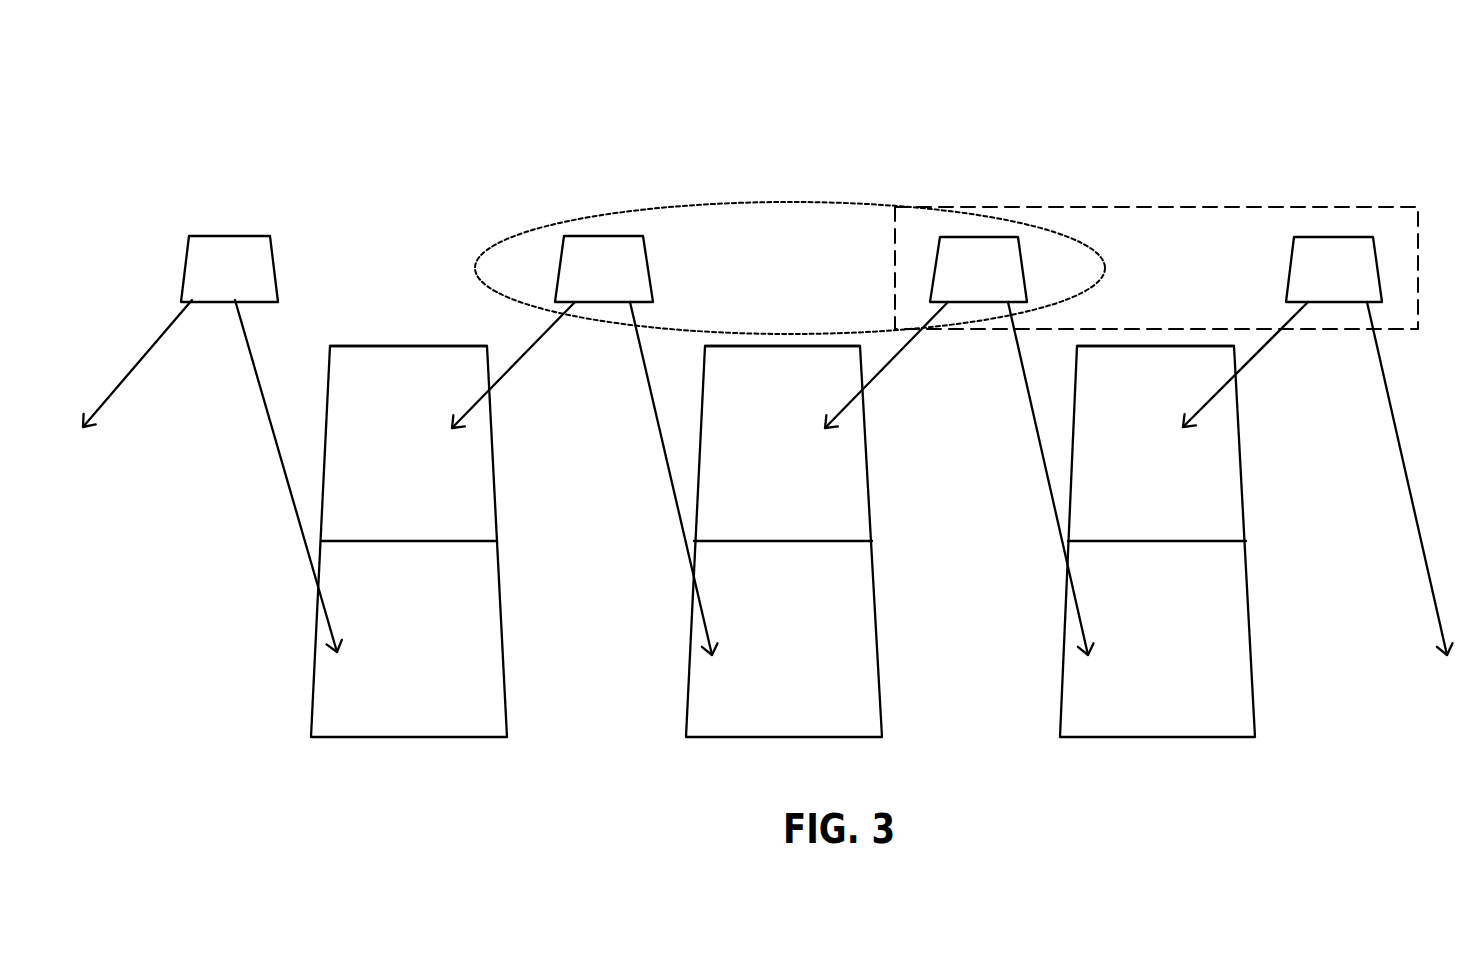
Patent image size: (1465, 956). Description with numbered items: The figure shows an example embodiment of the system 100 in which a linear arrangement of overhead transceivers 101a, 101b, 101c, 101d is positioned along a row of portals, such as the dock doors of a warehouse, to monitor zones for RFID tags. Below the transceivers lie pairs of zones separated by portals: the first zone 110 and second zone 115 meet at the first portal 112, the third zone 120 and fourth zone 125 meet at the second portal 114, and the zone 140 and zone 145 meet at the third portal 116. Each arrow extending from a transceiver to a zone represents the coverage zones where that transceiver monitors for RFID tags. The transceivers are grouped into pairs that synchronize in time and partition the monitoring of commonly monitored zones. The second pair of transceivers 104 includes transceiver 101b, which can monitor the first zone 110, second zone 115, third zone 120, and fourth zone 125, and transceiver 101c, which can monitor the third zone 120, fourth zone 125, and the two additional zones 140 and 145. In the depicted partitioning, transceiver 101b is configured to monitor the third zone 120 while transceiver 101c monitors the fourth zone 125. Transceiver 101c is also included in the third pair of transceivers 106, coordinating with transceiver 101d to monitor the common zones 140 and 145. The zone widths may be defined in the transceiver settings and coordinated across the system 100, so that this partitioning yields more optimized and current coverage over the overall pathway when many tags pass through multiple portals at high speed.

The system 100 is at (426, 143).
The transceiver 101a is at (300, 175).
The transceiver 101b is at (624, 222).
The transceiver 101c is at (999, 219).
The transceiver 101d is at (1398, 176).
The second pair of transceivers 104 is at (838, 185).
The third pair of transceivers 106 is at (1207, 172).
The first zone 110 is at (327, 715).
The third zone 120 is at (701, 720).
The zone 140 is at (1074, 720).
The first portal 112 is at (513, 541).
The second portal 114 is at (955, 555).
The third portal 116 is at (1262, 541).
The second zone 115 is at (413, 340).
The fourth zone 125 is at (786, 345).
The zone 145 is at (1158, 342).